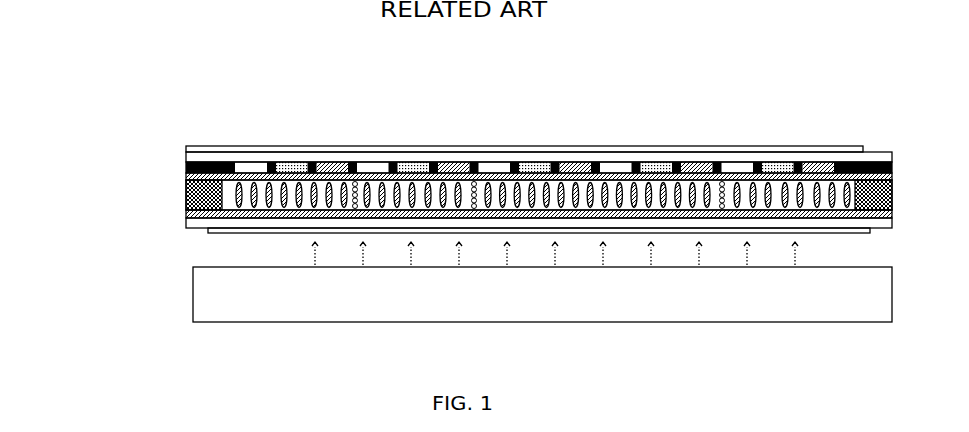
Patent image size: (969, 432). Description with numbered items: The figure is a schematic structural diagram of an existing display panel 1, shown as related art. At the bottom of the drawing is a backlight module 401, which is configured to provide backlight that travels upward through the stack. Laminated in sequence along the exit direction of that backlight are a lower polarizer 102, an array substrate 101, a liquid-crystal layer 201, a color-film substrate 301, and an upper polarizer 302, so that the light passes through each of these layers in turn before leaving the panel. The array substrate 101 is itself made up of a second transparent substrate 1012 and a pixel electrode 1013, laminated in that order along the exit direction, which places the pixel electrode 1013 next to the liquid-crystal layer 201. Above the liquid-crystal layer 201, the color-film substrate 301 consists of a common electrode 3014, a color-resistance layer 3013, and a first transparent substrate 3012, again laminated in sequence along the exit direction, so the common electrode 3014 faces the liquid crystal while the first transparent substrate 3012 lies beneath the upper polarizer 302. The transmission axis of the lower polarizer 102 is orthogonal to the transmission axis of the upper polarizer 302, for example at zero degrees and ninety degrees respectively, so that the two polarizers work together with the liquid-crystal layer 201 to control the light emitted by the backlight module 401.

The display panel 1 is at (84, 59).
The upper polarizer 302 is at (205, 147).
The color-film substrate 301 is at (71, 112).
The first transparent substrate 3012 is at (186, 157).
The color-resistance layer 3013 is at (186, 167).
The common electrode 3014 is at (186, 177).
The liquid-crystal layer 201 is at (172, 200).
The array substrate 101 is at (72, 224).
The pixel electrode 1013 is at (186, 219).
The second transparent substrate 1012 is at (187, 229).
The lower polarizer 102 is at (213, 237).
The backlight module 401 is at (193, 303).